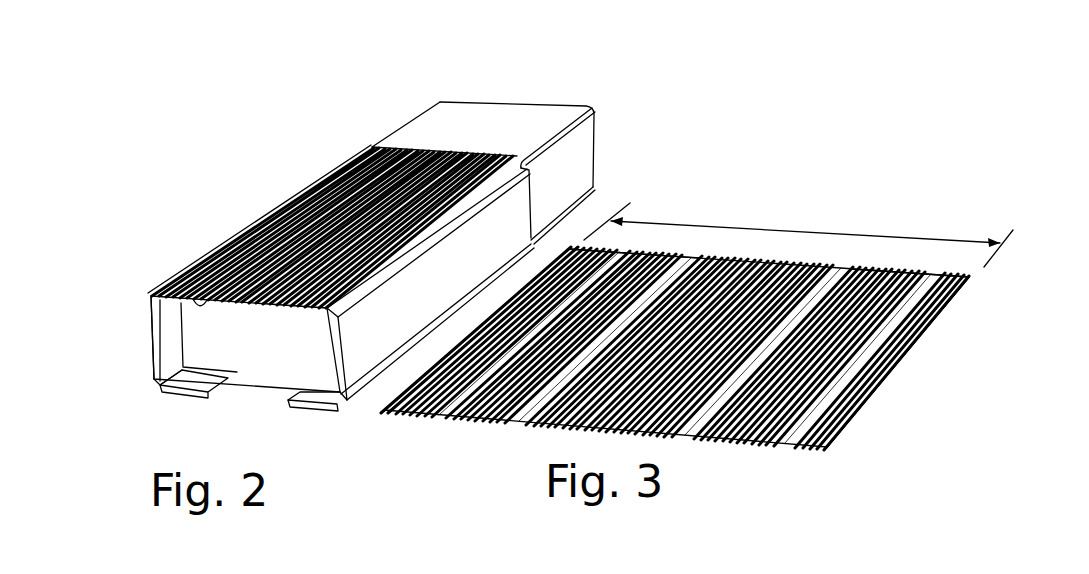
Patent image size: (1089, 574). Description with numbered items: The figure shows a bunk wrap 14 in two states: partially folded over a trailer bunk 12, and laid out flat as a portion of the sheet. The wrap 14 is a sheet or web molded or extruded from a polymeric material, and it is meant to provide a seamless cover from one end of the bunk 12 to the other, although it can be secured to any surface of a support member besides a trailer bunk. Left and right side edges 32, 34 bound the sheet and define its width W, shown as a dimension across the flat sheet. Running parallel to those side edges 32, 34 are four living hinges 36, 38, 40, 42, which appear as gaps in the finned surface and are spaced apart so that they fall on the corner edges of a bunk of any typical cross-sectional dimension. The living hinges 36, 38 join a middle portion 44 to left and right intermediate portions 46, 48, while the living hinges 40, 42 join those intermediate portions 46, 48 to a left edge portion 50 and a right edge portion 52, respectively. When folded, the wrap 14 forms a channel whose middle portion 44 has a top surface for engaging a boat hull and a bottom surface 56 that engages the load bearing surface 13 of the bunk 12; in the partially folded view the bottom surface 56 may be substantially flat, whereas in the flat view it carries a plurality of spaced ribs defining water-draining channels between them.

In FIG. 2, the bunk 12 is at (507, 104).
In FIG. 2, the load bearing surface 13 is at (436, 128).
In FIG. 2, the wrap 14 is at (309, 285).
In FIG. 3, the wrap 14 is at (698, 347).
In FIG. 2, the left side edge 32 is at (211, 395).
In FIG. 3, the left side edge 32 is at (385, 412).
In FIG. 2, the right side edge 34 is at (280, 404).
In FIG. 3, the right side edge 34 is at (827, 448).
In FIG. 2, the living hinge 36 is at (151, 295).
In FIG. 3, the living hinge 36 is at (523, 419).
In FIG. 2, the living hinge 38 is at (328, 318).
In FIG. 3, the living hinge 38 is at (680, 431).
In FIG. 2, the living hinge 40 is at (160, 388).
In FIG. 3, the living hinge 40 is at (433, 413).
In FIG. 2, the living hinge 42 is at (346, 394).
In FIG. 3, the living hinge 42 is at (783, 437).
In FIG. 2, the middle portion 44 is at (328, 181).
In FIG. 3, the middle portion 44 is at (807, 267).
In FIG. 3, the left intermediate portion 46 is at (657, 254).
In FIG. 3, the right intermediate portion 48 is at (895, 270).
In FIG. 3, the left edge portion 50 is at (593, 250).
In FIG. 3, the right edge portion 52 is at (967, 286).
In FIG. 2, the bottom surface 56 is at (198, 298).
In FIG. 3, the width W is at (794, 229).